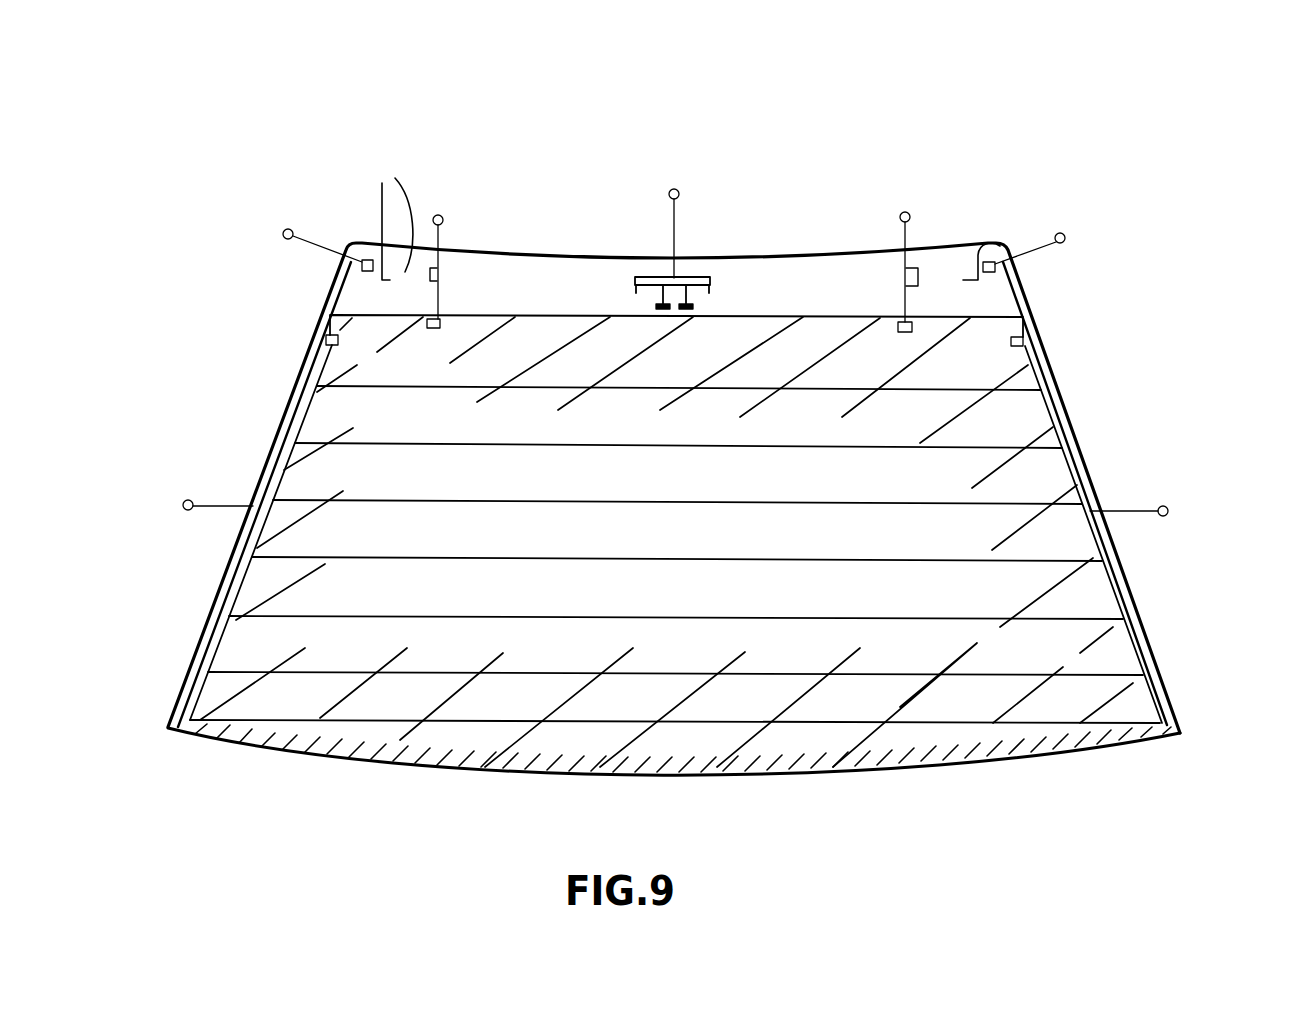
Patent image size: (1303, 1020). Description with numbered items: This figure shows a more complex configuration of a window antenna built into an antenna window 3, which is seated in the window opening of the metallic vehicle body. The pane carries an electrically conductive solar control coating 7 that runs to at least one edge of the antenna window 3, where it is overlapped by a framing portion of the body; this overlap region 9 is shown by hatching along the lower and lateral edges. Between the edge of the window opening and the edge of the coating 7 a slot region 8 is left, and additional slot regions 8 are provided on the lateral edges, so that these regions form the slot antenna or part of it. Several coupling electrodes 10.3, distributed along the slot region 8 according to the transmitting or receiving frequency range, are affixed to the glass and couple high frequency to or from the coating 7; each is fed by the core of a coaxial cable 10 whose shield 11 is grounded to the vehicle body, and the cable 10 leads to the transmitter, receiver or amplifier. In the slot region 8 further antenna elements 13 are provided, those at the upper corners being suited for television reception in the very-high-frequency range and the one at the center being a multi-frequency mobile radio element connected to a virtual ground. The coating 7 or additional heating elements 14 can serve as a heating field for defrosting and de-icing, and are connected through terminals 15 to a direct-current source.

The antenna window 3 is at (1078, 297).
The solar control coating 7 is at (957, 422).
The slot region 8 is at (596, 290).
The overlap region 9 is at (1097, 744).
The coaxial cable 10 is at (282, 205).
The coupling electrode 10.3 is at (328, 338).
The shield 11 is at (283, 233).
The antenna elements 13 is at (993, 190).
The heating elements 14 is at (363, 716).
The terminals 15 is at (186, 500).